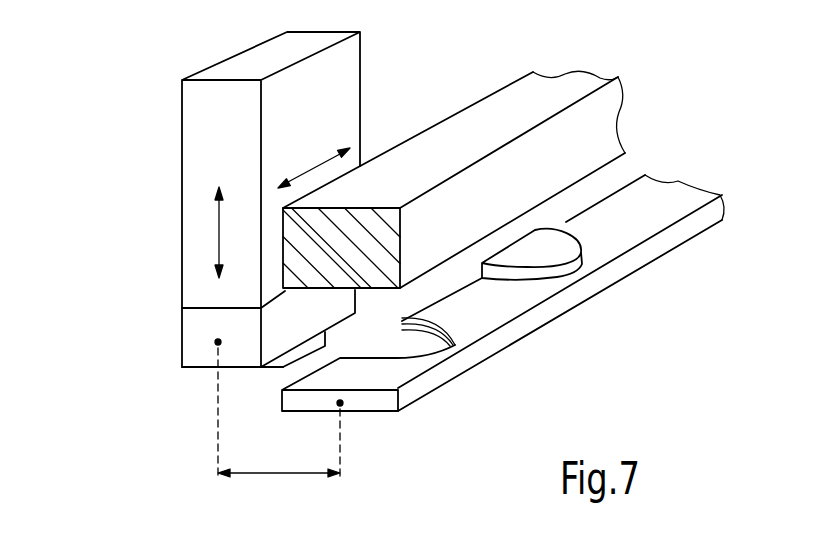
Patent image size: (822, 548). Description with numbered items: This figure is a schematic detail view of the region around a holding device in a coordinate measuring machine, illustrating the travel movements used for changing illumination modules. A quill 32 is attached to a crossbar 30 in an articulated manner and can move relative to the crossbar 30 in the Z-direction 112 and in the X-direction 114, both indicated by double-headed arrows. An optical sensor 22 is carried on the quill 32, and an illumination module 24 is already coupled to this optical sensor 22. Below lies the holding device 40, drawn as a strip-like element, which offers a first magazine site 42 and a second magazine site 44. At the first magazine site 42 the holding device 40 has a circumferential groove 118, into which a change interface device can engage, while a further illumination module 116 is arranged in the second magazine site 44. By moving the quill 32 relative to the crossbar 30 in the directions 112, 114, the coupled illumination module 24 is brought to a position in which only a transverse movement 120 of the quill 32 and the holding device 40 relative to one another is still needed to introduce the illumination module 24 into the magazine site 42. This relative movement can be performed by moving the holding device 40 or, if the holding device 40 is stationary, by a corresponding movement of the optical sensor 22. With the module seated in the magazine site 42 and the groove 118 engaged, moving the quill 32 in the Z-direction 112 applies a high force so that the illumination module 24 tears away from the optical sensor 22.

The optical sensor 22 is at (198, 330).
The illumination module 24 is at (300, 350).
The crossbar 30 is at (588, 137).
The quill 32 is at (200, 142).
The holding device 40 is at (675, 205).
The first magazine site 42 is at (415, 376).
The second magazine site 44 is at (548, 296).
The Z-direction 112 is at (219, 228).
The X-direction 114 is at (312, 168).
The further illumination module 116 is at (563, 268).
The circumferential groove 118 is at (455, 345).
The transverse movement 120 is at (270, 476).